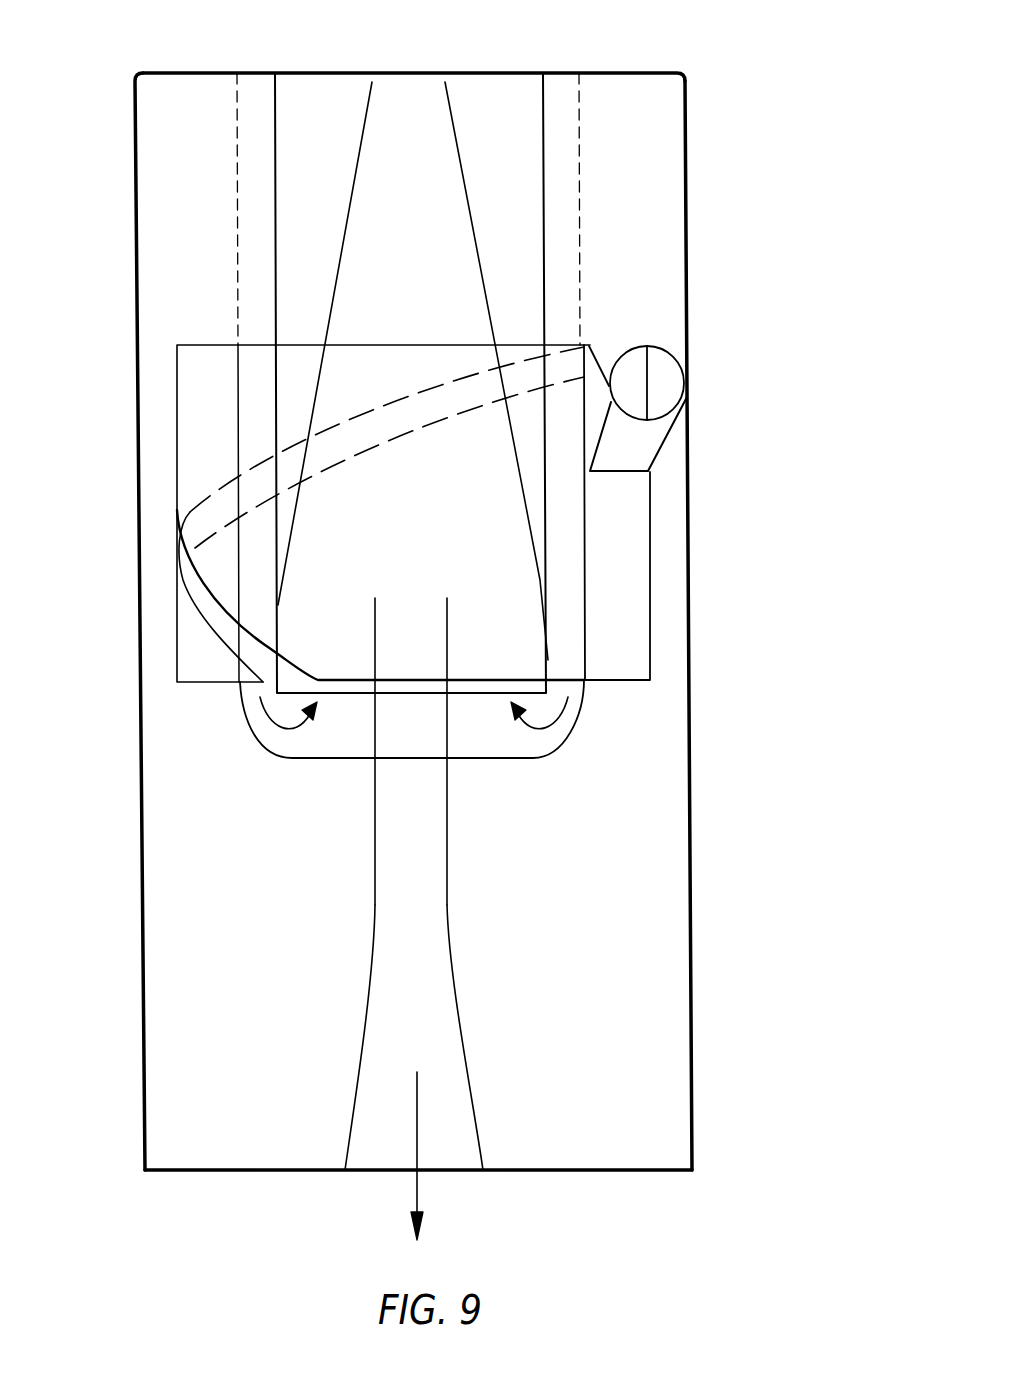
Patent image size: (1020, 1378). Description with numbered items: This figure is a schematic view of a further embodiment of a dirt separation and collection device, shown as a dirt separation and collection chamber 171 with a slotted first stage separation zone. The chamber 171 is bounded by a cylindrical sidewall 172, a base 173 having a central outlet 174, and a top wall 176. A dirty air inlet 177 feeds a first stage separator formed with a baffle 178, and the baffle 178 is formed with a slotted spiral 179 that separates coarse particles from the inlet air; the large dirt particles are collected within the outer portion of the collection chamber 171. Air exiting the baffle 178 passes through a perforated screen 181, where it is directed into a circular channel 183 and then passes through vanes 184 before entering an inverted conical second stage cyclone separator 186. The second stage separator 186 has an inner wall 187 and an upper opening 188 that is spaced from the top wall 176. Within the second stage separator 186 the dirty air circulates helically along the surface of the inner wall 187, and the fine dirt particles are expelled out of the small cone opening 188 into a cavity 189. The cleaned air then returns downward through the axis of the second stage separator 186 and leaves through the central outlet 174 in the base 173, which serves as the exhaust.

The dirt separation and collection chamber 171 is at (745, 494).
The cylindrical sidewall 172 is at (691, 657).
The base 173 is at (623, 1172).
The central outlet 174 is at (442, 1158).
The top wall 176 is at (625, 72).
The dirty air inlet 177 is at (642, 363).
The baffle 178 is at (183, 442).
The slotted spiral 179 is at (208, 605).
The perforated screen 181 is at (237, 237).
The circular channel 183 is at (550, 657).
The vanes 184 is at (468, 743).
The second stage cyclone separator 186 is at (478, 251).
The inner wall 187 is at (338, 270).
The upper opening 188 is at (427, 86).
The cavity 189 is at (538, 515).